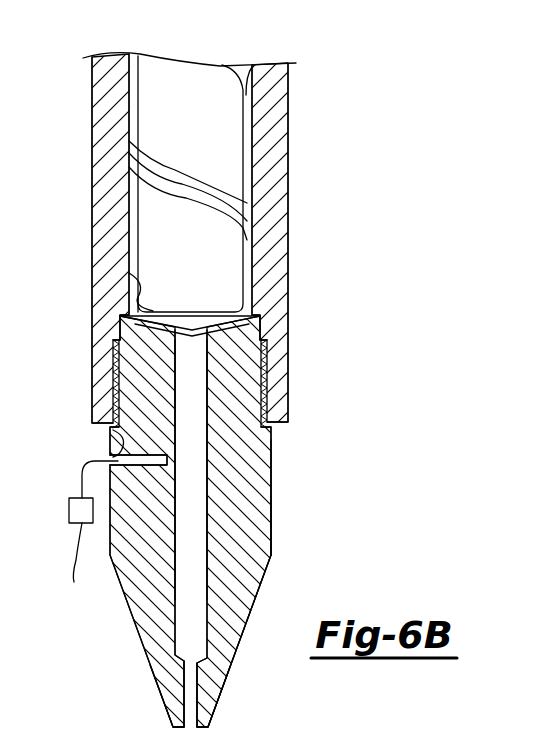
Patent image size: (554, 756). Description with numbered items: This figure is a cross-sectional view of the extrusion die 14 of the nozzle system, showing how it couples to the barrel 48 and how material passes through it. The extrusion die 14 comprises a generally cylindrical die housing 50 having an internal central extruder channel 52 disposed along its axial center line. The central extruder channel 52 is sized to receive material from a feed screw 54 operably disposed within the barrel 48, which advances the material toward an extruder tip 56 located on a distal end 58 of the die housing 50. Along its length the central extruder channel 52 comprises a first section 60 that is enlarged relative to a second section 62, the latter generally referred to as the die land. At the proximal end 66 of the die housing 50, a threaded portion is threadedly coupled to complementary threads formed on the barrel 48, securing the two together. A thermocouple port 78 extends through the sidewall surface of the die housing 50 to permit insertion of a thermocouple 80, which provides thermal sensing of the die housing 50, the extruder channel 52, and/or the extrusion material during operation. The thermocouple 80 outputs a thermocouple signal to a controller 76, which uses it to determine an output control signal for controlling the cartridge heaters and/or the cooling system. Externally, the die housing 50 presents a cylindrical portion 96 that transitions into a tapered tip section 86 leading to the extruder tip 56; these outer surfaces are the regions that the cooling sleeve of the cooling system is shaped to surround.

The extrusion die 14 is at (368, 107).
The barrel 48 is at (289, 104).
The feed screw 54 is at (228, 153).
The proximal end 66 is at (118, 332).
The central extruder channel 52 is at (193, 355).
The die housing 50 is at (271, 480).
The first section 60 is at (190, 382).
The thermocouple 80 is at (137, 462).
The thermocouple port 78 is at (113, 430).
The controller 76 is at (77, 552).
The cylindrical portion 96 is at (270, 535).
The tapered tip section 86 is at (243, 627).
The distal end 58 is at (217, 702).
The second section 62 is at (193, 688).
The extruder tip 56 is at (173, 726).